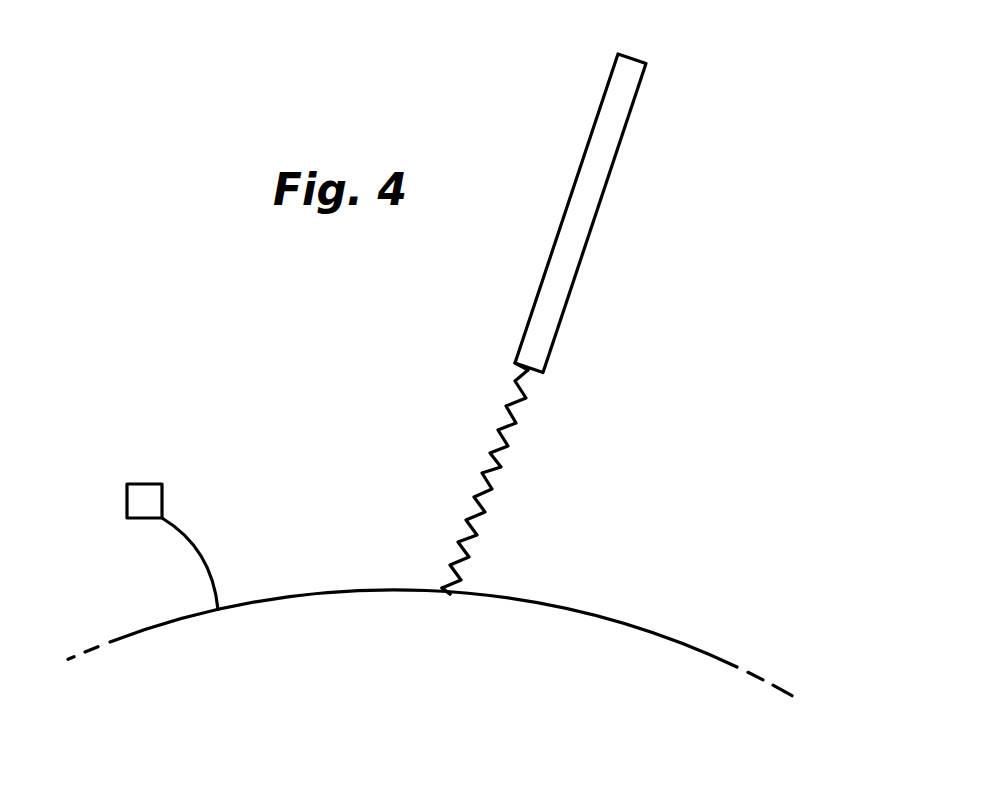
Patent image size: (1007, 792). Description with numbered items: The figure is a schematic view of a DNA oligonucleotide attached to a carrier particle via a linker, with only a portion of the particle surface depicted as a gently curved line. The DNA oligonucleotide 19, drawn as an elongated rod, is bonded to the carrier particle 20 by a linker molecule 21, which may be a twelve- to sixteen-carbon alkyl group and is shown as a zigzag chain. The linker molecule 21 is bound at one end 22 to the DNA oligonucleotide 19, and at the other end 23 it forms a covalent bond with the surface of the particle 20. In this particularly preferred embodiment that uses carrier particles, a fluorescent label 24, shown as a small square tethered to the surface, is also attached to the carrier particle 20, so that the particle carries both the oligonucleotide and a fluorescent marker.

The DNA oligonucleotide 19 is at (598, 214).
The carrier particle 20 is at (653, 635).
The linker molecule 21 is at (500, 448).
The one end 22 is at (508, 373).
The other end 23 is at (443, 593).
The fluorescent label 24 is at (145, 483).